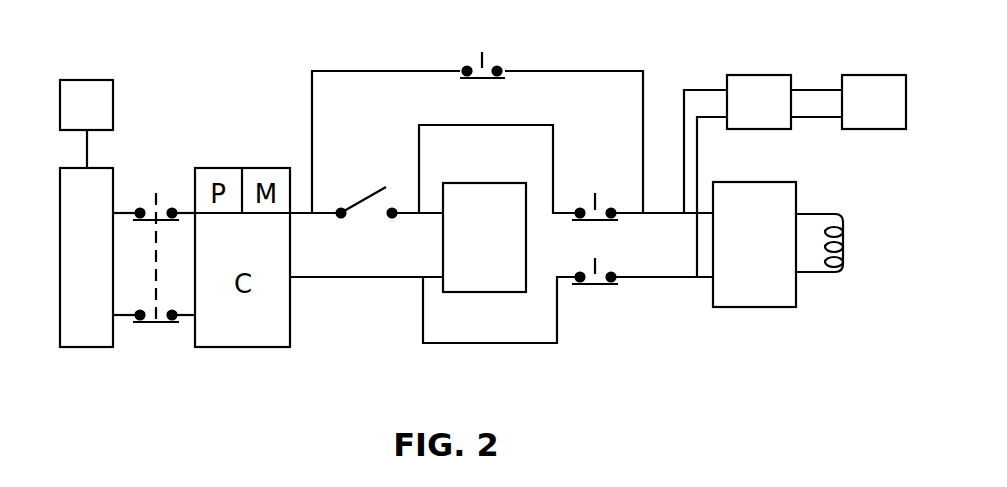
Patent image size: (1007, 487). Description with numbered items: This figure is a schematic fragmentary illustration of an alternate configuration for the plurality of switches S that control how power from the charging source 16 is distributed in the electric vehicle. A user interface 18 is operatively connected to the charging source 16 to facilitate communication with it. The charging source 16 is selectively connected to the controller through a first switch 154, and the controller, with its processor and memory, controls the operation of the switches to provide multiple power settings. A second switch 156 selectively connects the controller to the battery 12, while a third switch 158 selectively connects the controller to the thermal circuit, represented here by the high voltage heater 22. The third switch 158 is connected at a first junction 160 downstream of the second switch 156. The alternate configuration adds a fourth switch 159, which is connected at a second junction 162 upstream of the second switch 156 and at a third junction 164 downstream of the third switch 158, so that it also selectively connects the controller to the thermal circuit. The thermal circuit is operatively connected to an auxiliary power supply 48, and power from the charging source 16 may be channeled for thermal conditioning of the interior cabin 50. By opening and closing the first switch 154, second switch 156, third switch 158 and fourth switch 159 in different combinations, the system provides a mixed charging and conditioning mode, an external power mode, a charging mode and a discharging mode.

The plurality of switches S is at (298, 54).
The user interface 18 is at (73, 80).
The charging source 16 is at (73, 168).
The first switch 154 is at (163, 193).
The second switch 156 is at (352, 191).
The second junction 162 is at (312, 220).
The first junction 160 is at (421, 225).
The battery 12 is at (485, 183).
The fourth switch 159 is at (501, 52).
The third switch 158 is at (591, 182).
The third junction 164 is at (643, 224).
The high voltage heater 22 is at (763, 182).
The interior cabin 50 is at (758, 75).
The auxiliary power supply 48 is at (873, 75).